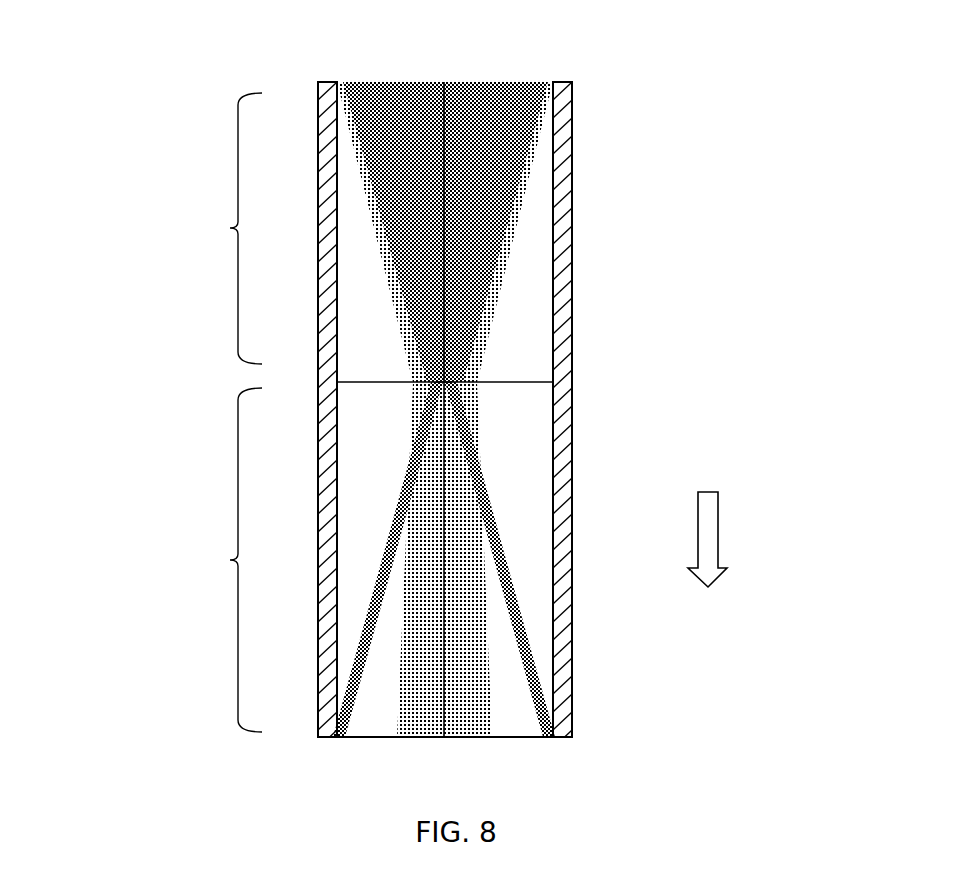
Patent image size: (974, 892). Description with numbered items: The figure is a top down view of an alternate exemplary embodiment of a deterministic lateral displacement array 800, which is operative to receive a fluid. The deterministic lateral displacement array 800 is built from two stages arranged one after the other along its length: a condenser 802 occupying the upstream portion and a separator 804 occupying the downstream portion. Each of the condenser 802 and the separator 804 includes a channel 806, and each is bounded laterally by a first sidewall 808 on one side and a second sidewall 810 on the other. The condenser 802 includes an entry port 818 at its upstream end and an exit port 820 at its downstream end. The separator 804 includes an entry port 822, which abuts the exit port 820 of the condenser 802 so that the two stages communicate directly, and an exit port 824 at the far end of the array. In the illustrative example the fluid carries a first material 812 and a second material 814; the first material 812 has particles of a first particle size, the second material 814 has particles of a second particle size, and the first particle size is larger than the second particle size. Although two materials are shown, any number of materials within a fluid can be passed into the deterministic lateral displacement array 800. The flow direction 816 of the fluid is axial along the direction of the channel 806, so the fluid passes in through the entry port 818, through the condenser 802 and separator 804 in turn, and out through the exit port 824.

The deterministic lateral displacement array 800 is at (830, 225).
The condenser 802 is at (230, 228).
The separator 804 is at (230, 560).
The channel 806 is at (372, 515).
The first sidewall 808 is at (572, 98).
The second sidewall 810 is at (327, 90).
The first material 812 is at (525, 640).
The second material 814 is at (460, 558).
The flow direction 816 is at (727, 568).
The entry port 818 is at (442, 82).
The exit port 820 is at (398, 382).
The entry port 822 is at (400, 383).
The exit port 824 is at (388, 738).